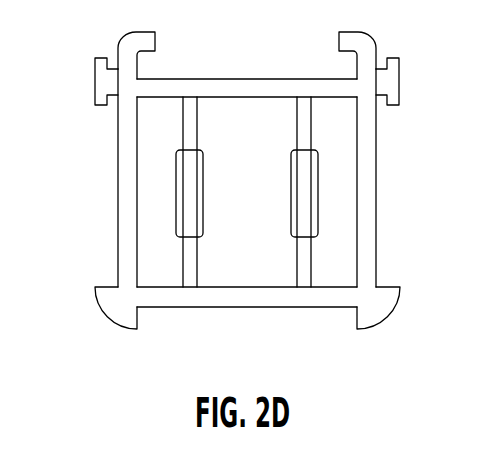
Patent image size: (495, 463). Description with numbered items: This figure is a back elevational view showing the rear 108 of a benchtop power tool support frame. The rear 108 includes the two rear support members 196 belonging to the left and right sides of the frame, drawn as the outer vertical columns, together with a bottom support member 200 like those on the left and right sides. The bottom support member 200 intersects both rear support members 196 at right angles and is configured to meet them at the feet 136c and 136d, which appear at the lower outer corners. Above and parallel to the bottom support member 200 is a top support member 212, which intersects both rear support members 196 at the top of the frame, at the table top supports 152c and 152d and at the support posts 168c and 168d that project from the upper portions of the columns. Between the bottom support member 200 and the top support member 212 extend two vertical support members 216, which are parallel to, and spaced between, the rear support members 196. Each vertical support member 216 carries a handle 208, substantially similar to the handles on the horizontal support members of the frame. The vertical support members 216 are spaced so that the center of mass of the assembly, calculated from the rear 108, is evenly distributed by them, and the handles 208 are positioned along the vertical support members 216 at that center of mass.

The rear 108 is at (418, 228).
The table top support 152c is at (143, 45).
The table top support 152d is at (361, 51).
The support post 168c is at (98, 84).
The support post 168d is at (396, 88).
The rear support member 196 is at (125, 240).
The top support member 212 is at (259, 84).
The vertical support member 216 is at (298, 140).
The handle 208 is at (298, 209).
The bottom support member 200 is at (235, 300).
The foot 136c is at (116, 316).
The foot 136d is at (373, 315).